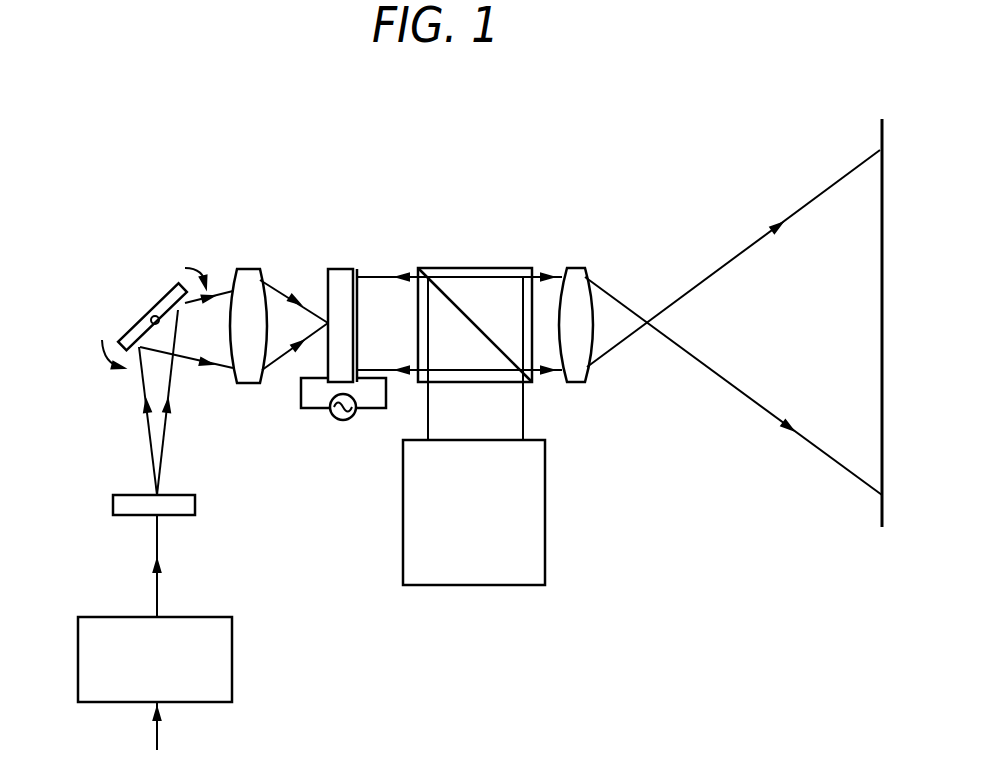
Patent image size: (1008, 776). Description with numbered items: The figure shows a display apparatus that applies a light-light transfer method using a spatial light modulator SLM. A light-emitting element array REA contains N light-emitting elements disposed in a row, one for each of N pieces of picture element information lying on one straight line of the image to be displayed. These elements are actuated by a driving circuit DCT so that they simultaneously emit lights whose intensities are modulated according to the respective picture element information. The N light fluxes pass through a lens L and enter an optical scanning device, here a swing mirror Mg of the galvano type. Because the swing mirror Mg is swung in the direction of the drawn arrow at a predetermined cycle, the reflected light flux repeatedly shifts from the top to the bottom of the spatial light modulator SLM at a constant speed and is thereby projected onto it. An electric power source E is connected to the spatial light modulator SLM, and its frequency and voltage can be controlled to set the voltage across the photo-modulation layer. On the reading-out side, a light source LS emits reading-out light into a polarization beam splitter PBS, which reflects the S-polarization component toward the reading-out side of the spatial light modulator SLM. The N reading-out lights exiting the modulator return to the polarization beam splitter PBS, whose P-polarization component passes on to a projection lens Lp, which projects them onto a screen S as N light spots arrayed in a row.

The swing mirror Mg is at (143, 322).
The lens L is at (248, 269).
The spatial light modulator SLM is at (343, 273).
The electric power source E is at (334, 421).
The polarization beam splitter PBS is at (455, 270).
The projection lens Lp is at (575, 273).
The light source LS is at (538, 465).
The screen S is at (878, 146).
The light-emitting element array REA is at (182, 503).
The driving circuit DCT is at (223, 630).